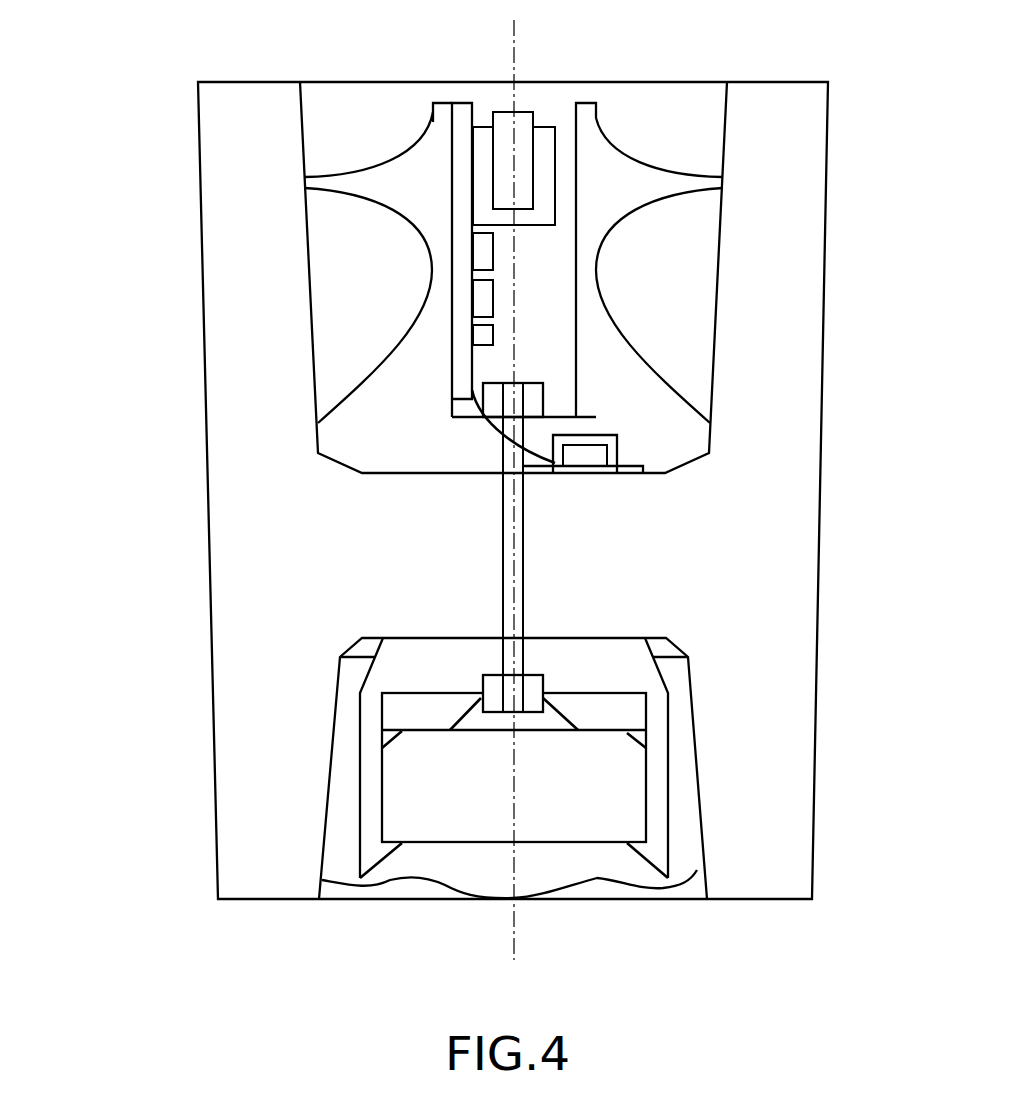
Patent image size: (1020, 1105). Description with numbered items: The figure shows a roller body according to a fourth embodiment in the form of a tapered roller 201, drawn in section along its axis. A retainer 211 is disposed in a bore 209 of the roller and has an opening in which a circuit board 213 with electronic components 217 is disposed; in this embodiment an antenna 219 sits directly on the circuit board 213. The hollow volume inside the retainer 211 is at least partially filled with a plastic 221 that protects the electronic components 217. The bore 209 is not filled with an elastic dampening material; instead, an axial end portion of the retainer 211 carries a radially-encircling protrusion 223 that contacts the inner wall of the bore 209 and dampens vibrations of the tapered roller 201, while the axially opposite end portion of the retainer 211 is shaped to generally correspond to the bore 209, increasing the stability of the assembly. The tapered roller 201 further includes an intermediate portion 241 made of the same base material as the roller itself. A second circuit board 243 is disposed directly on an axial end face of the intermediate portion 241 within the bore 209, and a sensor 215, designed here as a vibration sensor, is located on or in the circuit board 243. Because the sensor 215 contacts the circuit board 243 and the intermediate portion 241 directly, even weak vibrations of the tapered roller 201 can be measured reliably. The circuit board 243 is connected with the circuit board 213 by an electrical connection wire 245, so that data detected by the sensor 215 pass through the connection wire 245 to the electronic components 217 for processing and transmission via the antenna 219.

The tapered roller 201 is at (148, 160).
The bore 209 is at (333, 106).
The retainer 211 is at (598, 148).
The circuit board 213 is at (463, 112).
The sensor 215 is at (593, 450).
The electronic components 217 is at (490, 335).
The antenna 219 is at (523, 123).
The plastic 221 is at (562, 366).
The radially-encircling protrusion 223 is at (655, 177).
The intermediate portion 241 is at (370, 567).
The circuit board 243 is at (642, 472).
The electrical connection wire 245 is at (490, 437).